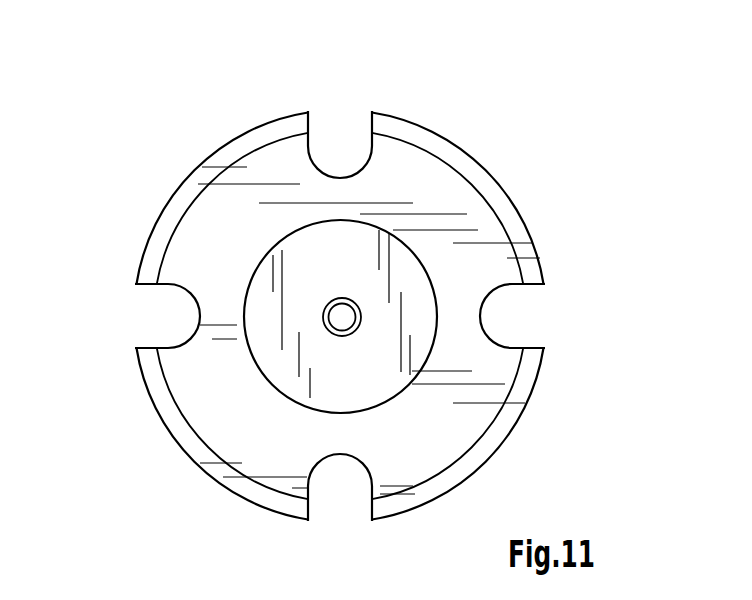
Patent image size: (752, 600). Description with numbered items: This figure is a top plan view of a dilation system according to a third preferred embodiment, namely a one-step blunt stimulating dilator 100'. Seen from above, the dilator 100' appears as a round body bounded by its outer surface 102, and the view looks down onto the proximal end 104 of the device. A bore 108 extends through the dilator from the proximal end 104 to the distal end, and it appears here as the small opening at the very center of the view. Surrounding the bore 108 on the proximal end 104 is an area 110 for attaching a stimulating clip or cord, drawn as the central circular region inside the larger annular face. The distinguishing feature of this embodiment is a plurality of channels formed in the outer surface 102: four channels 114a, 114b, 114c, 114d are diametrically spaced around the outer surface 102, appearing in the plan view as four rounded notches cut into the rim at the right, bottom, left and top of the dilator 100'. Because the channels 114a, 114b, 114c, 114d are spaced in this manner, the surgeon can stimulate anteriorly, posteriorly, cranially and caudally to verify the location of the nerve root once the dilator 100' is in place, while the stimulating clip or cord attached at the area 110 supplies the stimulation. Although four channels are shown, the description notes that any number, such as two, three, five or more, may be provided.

The stimulating dilator 100' is at (587, 105).
The outer surface 102 is at (508, 444).
The proximal end 104 is at (227, 207).
The bore 108 is at (342, 317).
The area for attaching a stimulating clip or cord 110 is at (303, 362).
The channel 114a is at (532, 320).
The channel 114b is at (338, 512).
The channel 114c is at (137, 317).
The channel 114d is at (343, 115).